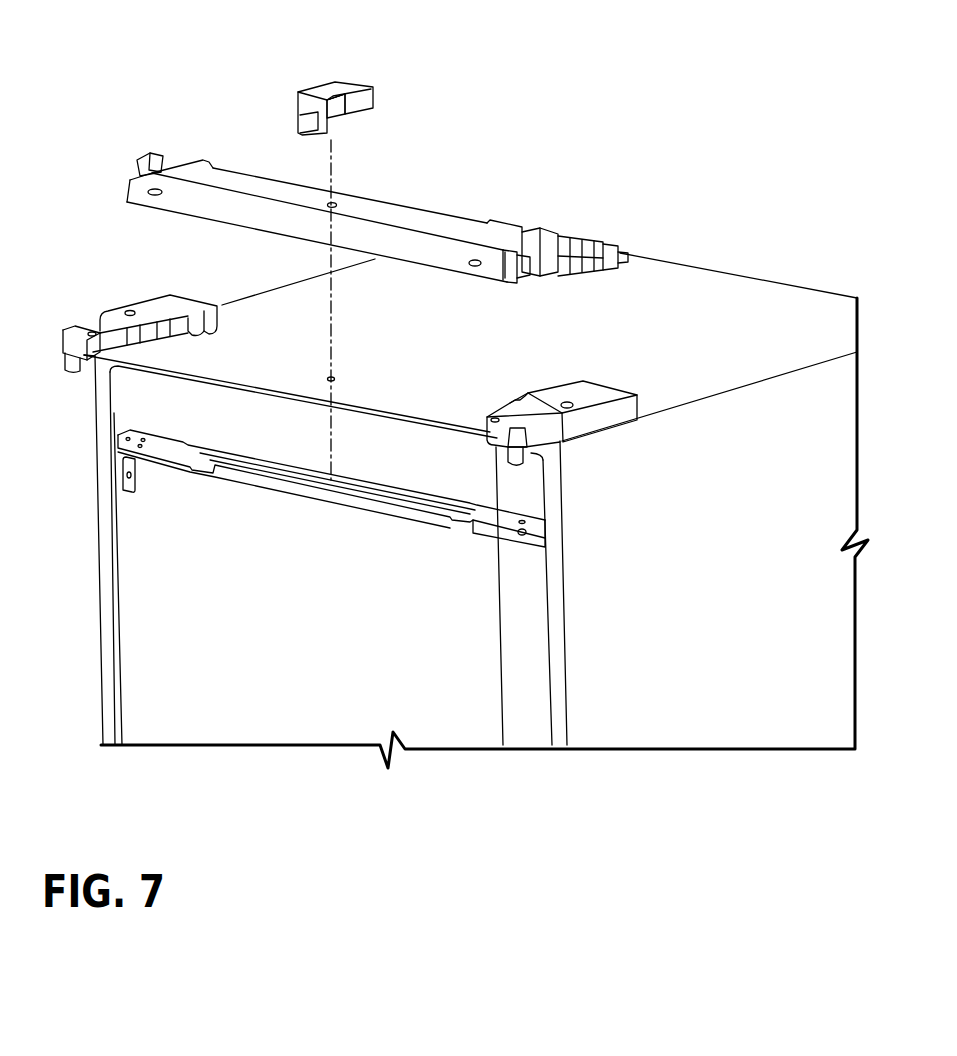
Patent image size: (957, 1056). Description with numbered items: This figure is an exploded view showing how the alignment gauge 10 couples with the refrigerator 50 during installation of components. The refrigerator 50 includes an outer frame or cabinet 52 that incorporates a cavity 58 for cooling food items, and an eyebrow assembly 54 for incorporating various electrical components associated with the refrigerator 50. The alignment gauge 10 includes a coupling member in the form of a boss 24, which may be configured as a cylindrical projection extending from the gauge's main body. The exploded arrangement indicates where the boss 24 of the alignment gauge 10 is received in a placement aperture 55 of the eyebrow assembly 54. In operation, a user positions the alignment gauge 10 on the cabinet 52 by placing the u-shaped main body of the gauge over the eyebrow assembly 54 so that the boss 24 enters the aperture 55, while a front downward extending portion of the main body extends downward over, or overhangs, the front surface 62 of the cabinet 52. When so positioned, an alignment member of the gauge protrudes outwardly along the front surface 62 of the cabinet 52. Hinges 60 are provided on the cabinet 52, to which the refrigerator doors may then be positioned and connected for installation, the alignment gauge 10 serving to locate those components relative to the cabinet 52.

The alignment gauge 10 is at (356, 76).
The boss 24 is at (333, 105).
The refrigerator 50 is at (774, 260).
The cabinet 52 is at (660, 289).
The eyebrow assembly 54 is at (443, 223).
The placement aperture 55 is at (338, 205).
The cavity 58 is at (171, 527).
The hinge 60 is at (160, 312).
The front surface 62 is at (336, 379).